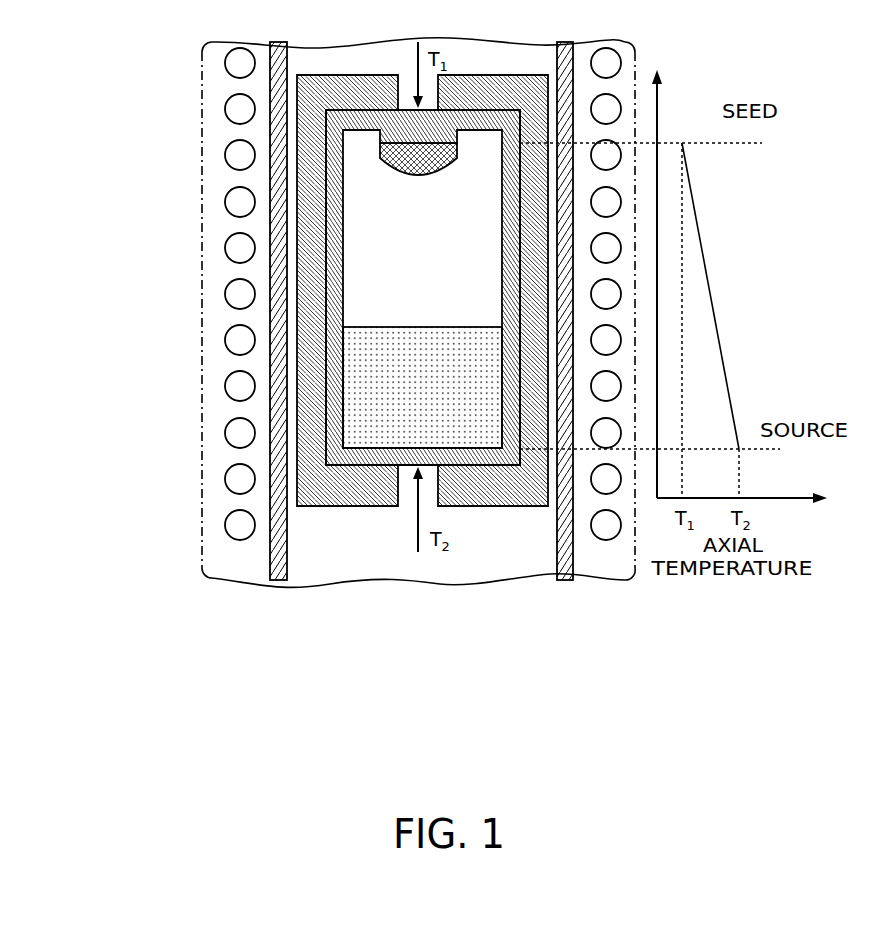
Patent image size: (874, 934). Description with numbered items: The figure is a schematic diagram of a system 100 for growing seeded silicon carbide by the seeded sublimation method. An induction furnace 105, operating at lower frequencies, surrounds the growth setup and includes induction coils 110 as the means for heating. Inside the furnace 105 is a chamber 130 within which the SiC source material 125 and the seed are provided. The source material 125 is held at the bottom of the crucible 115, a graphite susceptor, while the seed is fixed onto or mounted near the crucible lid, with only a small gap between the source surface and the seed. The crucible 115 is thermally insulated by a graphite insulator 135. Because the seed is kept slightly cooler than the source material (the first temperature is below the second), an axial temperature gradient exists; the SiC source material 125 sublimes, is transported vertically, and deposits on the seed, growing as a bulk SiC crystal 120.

The system for growing seeded SiC 100 is at (526, 714).
The induction furnace 105 is at (224, 557).
The induction coils 110 is at (214, 63).
The crucible 115 is at (329, 338).
The SiC crystal 120 is at (395, 154).
The SiC source material 125 is at (371, 417).
The chamber 130 is at (259, 507).
The graphite insulator 135 is at (304, 242).